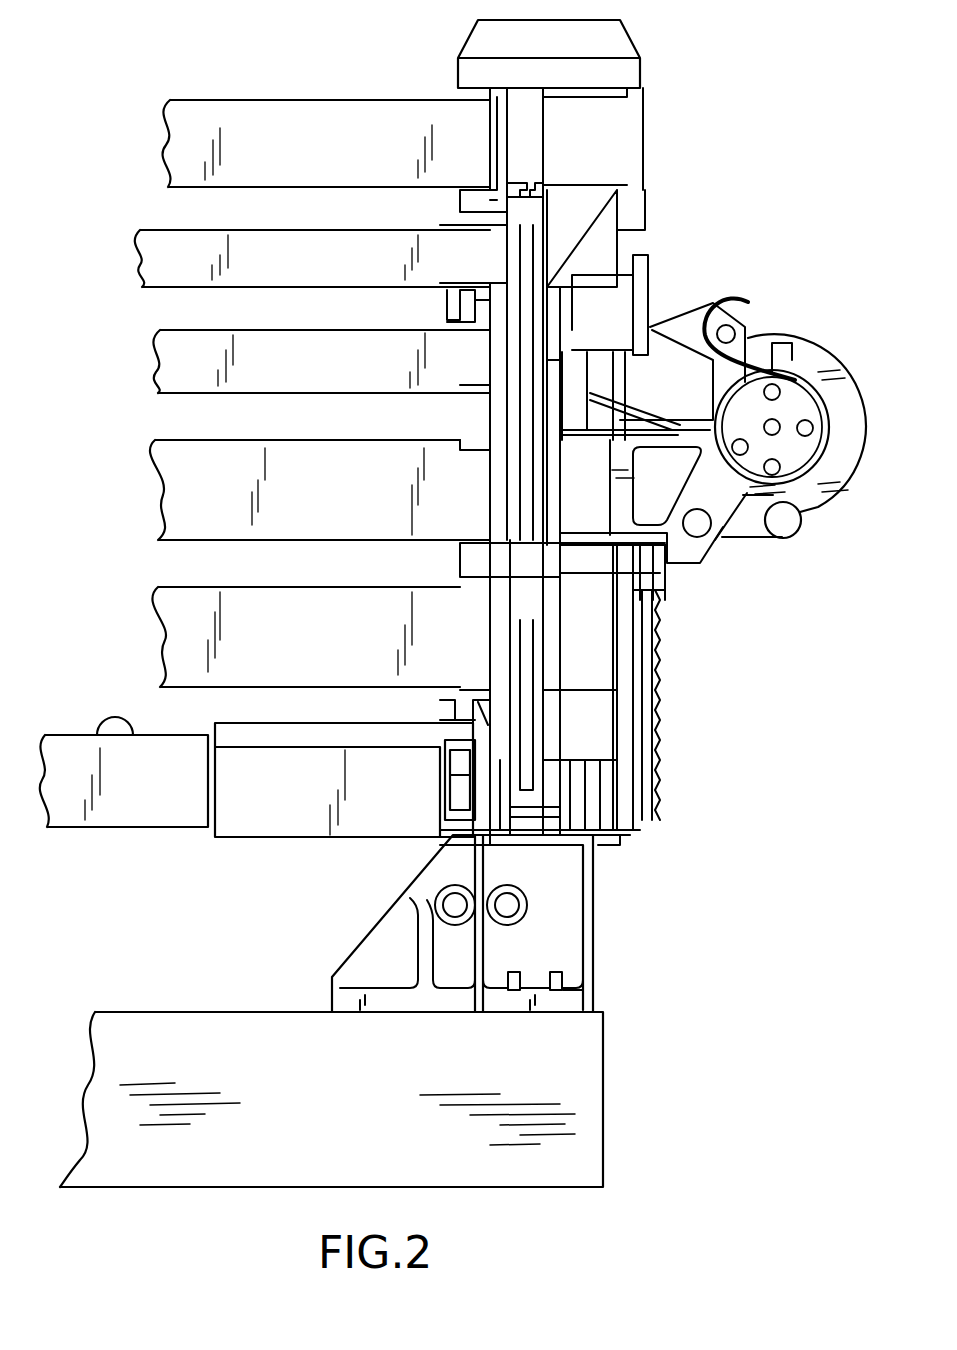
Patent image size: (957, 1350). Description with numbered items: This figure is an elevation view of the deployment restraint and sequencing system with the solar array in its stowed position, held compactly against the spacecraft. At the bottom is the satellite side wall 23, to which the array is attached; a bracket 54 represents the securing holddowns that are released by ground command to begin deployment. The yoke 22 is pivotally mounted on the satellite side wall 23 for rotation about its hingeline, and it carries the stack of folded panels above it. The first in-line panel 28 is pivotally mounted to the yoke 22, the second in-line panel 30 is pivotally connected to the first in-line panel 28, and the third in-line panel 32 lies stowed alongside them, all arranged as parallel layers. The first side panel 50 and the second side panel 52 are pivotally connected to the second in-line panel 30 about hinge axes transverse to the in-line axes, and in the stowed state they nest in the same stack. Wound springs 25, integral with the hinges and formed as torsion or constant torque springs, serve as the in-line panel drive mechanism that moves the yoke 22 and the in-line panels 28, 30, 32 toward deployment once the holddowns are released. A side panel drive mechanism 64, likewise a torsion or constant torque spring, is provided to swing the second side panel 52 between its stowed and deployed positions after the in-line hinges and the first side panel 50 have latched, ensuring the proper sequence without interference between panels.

The yoke 22 is at (150, 810).
The satellite side wall 23 is at (340, 1107).
The wound springs 25 is at (750, 338).
The first in-line panel 28 is at (321, 647).
The second in-line panel 30 is at (334, 506).
The third in-line panel 32 is at (322, 160).
The first side panel 50 is at (316, 272).
The second side panel 52 is at (316, 375).
The bracket 54 is at (568, 935).
The side panel drive mechanism 64 is at (822, 535).